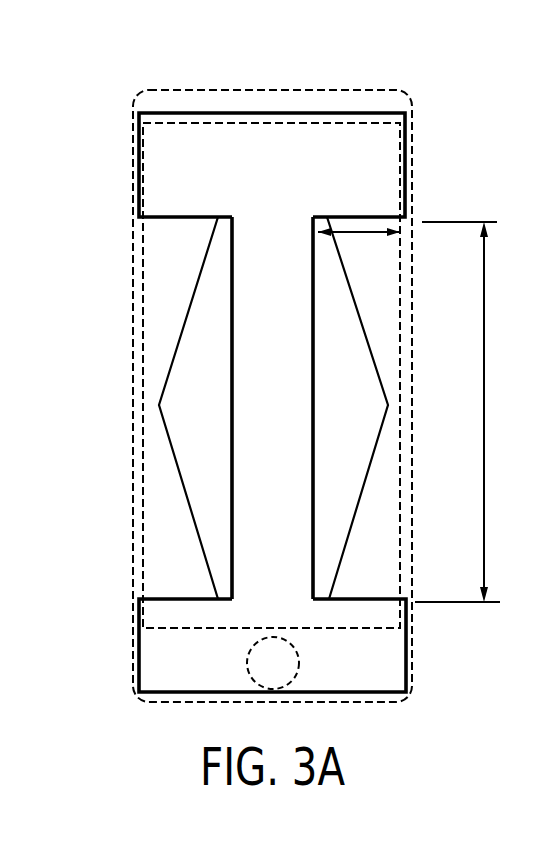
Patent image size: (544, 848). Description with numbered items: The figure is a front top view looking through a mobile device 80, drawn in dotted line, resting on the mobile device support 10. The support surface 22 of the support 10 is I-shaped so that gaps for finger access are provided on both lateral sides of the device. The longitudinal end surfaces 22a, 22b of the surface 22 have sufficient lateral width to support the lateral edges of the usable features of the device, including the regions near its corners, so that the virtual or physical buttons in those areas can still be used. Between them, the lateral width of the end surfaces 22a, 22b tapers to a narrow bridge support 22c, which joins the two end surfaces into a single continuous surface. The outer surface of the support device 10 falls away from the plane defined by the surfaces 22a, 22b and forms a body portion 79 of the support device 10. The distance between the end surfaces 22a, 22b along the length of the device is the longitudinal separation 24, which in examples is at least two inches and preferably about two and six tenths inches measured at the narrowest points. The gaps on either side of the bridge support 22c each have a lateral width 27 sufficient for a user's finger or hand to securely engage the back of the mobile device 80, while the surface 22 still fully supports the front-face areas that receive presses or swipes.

The mobile device support 10 is at (90, 123).
The support surface 22 is at (280, 599).
The first support element surface 22a is at (335, 142).
The second support element surface 22b is at (185, 672).
The narrow bridge support 22c is at (258, 373).
The longitudinal separation 24 is at (485, 503).
The lateral width 27 is at (360, 237).
The body portion 79 is at (343, 388).
The mobile device 80 is at (412, 673).